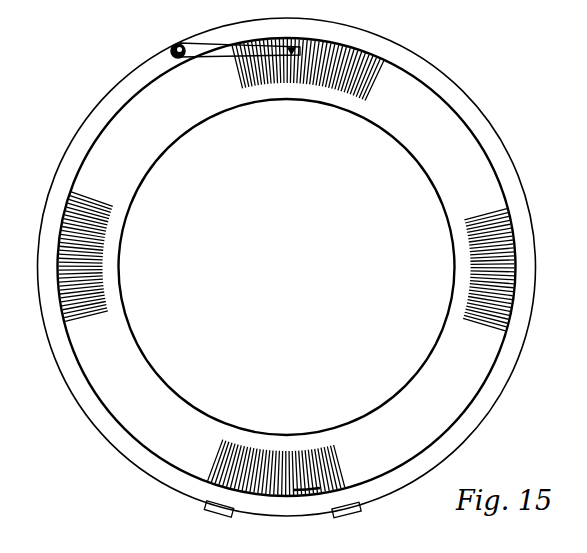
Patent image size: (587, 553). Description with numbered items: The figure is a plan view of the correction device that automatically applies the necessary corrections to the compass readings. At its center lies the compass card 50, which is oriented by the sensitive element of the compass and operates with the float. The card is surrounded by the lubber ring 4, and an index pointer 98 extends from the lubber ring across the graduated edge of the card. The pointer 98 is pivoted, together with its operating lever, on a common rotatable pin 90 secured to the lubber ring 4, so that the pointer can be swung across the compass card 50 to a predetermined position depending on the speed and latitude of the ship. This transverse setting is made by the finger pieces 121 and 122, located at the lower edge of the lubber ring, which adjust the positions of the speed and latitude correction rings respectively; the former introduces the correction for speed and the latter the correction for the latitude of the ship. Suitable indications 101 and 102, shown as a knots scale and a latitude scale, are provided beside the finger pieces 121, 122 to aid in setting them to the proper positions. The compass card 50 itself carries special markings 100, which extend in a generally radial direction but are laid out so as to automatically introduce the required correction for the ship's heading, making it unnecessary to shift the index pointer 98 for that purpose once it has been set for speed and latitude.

The lubber ring 4 is at (496, 397).
The compass card 50 is at (375, 113).
The rotatable pin 90 is at (171, 49).
The index pointer 98 is at (207, 50).
The special markings 100 is at (296, 488).
The speed indications 101 is at (204, 503).
The latitude indications 102 is at (366, 503).
The speed finger piece 121 is at (220, 514).
The latitude finger piece 122 is at (342, 514).